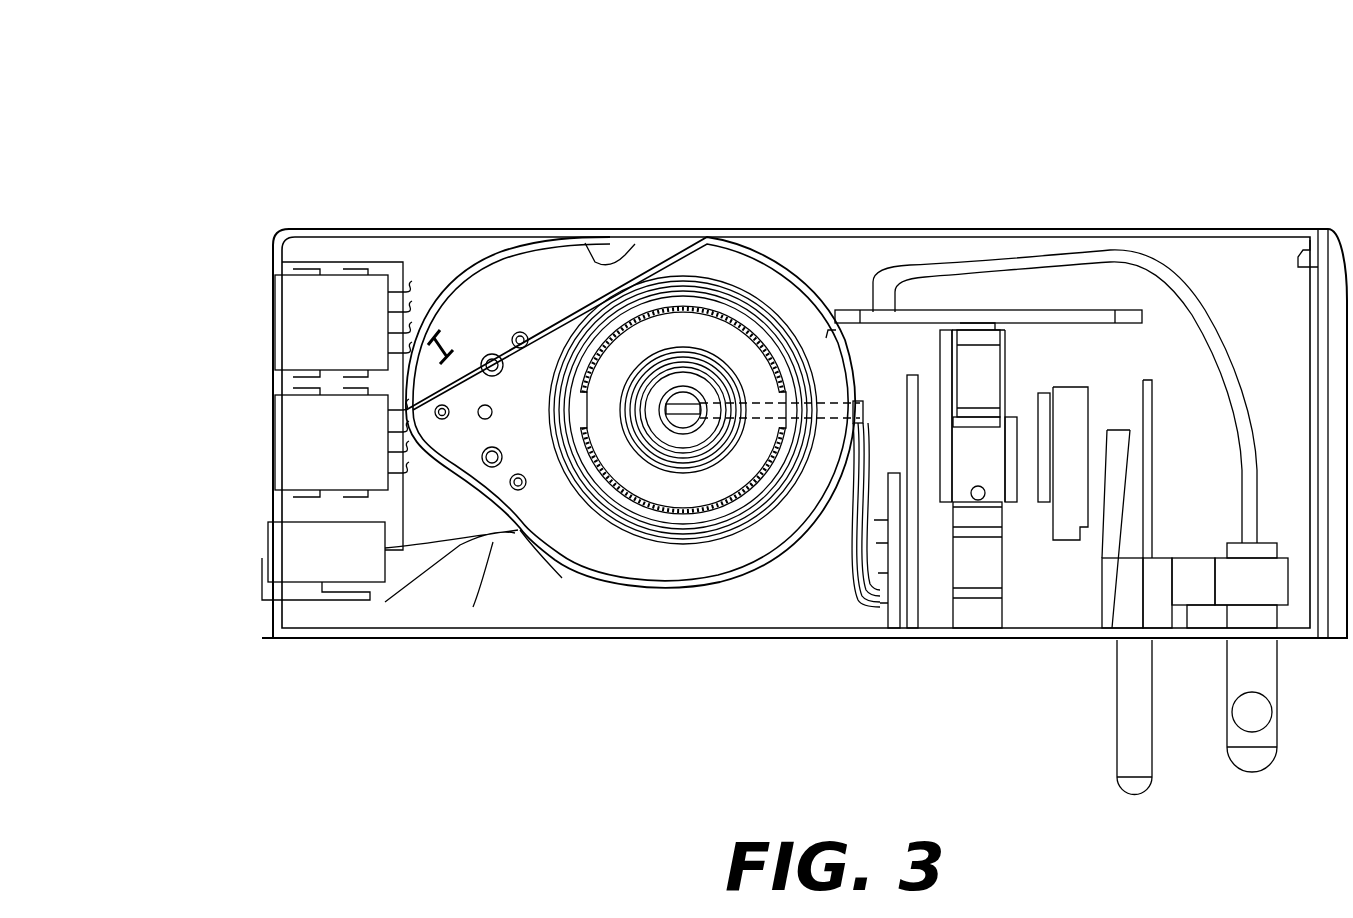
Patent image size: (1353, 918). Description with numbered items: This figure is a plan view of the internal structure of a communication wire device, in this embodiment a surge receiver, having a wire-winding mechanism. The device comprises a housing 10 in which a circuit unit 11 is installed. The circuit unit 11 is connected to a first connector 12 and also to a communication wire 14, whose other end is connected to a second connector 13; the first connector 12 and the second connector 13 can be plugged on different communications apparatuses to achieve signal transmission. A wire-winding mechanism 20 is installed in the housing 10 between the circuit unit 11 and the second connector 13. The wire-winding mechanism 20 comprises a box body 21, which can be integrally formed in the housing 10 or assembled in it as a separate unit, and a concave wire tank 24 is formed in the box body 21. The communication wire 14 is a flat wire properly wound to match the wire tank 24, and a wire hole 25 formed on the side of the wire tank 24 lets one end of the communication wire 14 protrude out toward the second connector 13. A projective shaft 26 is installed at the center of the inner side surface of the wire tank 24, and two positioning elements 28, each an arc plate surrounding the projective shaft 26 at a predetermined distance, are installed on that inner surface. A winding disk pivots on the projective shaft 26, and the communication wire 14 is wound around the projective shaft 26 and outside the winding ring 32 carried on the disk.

The housing 10 is at (960, 232).
The circuit unit 11 is at (962, 648).
The first connector 12 is at (290, 312).
The second connector 13 is at (302, 557).
The communication wire 14 is at (607, 512).
The wire-winding mechanism 20 is at (645, 215).
The box body 21 is at (513, 537).
The wire tank 24 is at (680, 565).
The wire hole 25 is at (480, 590).
The projective shaft 26 is at (694, 398).
The positioning element 28 is at (660, 398).
The winding ring 32 is at (702, 397).